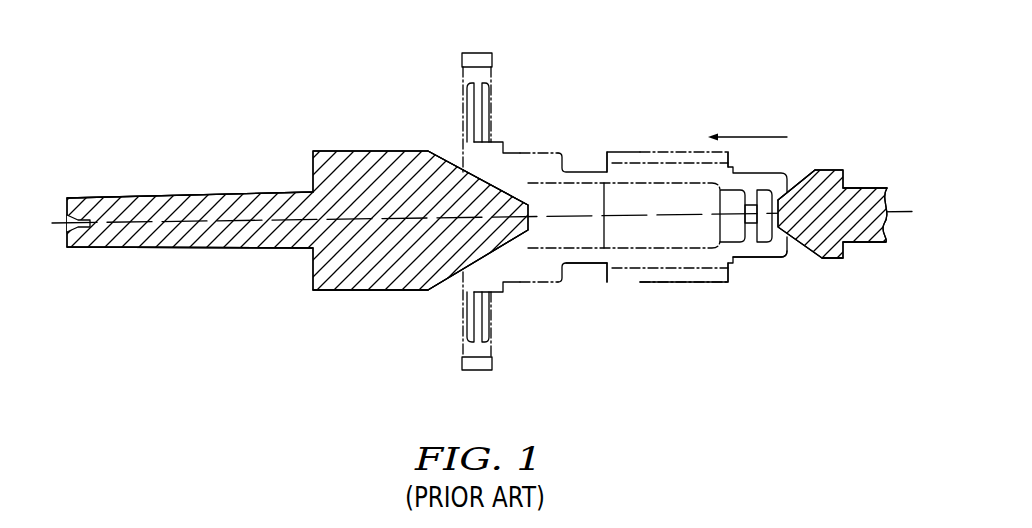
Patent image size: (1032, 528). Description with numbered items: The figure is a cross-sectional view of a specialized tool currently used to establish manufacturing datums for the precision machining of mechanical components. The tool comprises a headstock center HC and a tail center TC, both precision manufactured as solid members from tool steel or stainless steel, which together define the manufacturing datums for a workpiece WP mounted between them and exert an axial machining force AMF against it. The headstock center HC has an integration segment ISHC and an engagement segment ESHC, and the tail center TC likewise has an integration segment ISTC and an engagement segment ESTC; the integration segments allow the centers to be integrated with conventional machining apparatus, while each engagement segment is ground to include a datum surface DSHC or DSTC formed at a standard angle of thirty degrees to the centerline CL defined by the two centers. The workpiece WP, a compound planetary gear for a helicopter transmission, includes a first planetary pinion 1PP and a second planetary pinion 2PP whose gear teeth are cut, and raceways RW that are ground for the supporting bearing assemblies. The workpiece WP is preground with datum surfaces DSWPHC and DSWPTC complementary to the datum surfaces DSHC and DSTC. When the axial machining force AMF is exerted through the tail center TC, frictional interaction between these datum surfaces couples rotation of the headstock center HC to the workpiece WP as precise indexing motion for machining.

The headstock center HC is at (389, 141).
The integration segment of headstock center ISHC is at (178, 259).
The engagement segment of headstock center ESHC is at (338, 301).
The datum surface of headstock center DSHC is at (447, 145).
The first planetary pinion 1PP is at (502, 56).
The workpiece WP is at (525, 143).
The datum surface of workpiece for headstock center DSWPHC is at (490, 266).
The raceway RW is at (553, 297).
The centerline CL is at (672, 217).
The second planetary pinion 2PP is at (680, 142).
The axial machining force AMF is at (751, 124).
The datum surface of workpiece for tail center DSWPTC is at (784, 268).
The tail center TC is at (813, 265).
The datum surface of tail center DSTC is at (811, 158).
The engagement segment of tail center ESTC is at (842, 269).
The integration segment of tail center ISTC is at (877, 253).